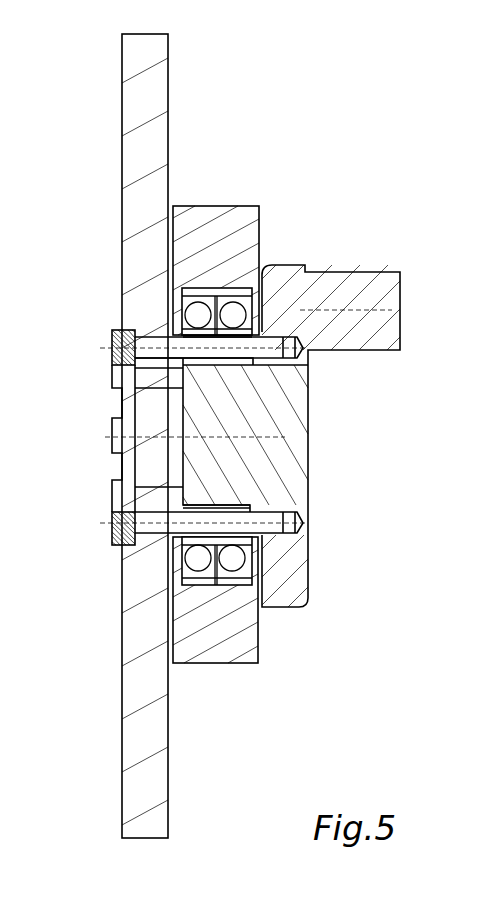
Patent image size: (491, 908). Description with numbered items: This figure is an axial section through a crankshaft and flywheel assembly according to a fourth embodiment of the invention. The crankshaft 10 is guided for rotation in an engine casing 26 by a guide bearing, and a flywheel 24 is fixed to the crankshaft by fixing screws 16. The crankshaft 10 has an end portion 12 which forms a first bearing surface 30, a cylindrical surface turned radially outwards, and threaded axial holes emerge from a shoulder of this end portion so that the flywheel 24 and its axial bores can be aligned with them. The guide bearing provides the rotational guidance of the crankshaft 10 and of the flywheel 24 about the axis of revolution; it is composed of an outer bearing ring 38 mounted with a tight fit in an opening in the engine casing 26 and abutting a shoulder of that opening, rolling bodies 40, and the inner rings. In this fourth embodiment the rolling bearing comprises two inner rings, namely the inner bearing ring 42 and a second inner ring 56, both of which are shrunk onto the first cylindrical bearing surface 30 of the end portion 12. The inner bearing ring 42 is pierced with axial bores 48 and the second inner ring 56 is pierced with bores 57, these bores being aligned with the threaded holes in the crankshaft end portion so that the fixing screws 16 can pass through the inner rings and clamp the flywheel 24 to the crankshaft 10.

The crankshaft 10 is at (354, 268).
The end portion 12 is at (195, 414).
The fixing screws 16 is at (112, 332).
The flywheel 24 is at (145, 103).
The engine casing 26 is at (227, 213).
The first bearing surface 30 is at (118, 372).
The outer bearing ring 38 is at (242, 290).
The rolling bodies 40 is at (260, 589).
The inner bearing ring 42 is at (240, 507).
The axial bores 48 is at (267, 327).
The inner ring 56 is at (203, 503).
The bores 57 is at (182, 337).